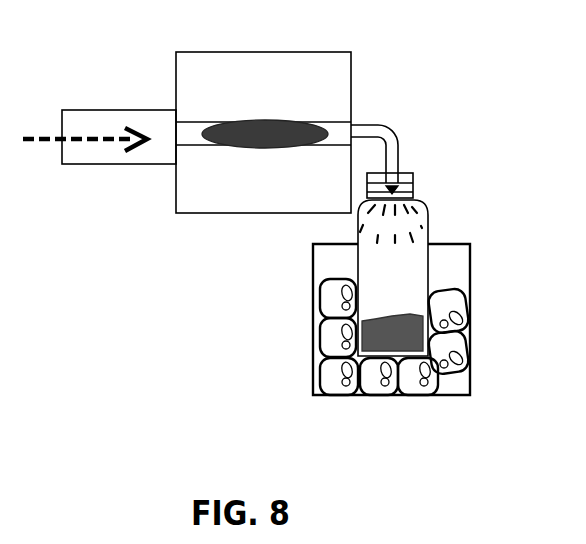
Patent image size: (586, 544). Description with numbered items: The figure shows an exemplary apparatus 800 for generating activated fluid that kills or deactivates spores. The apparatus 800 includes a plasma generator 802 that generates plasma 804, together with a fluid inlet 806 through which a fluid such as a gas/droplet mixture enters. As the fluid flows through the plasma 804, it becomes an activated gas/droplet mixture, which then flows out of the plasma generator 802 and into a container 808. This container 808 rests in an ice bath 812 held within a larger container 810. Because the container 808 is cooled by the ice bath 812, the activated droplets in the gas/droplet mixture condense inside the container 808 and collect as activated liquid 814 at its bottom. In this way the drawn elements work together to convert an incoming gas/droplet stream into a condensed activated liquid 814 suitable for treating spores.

The apparatus 800 is at (183, 294).
The plasma generator 802 is at (277, 52).
The plasma 804 is at (223, 120).
The fluid inlet 806 is at (105, 113).
The container 808 is at (422, 210).
The container 810 is at (470, 285).
The ice bath 812 is at (455, 347).
The activated liquid 814 is at (365, 328).